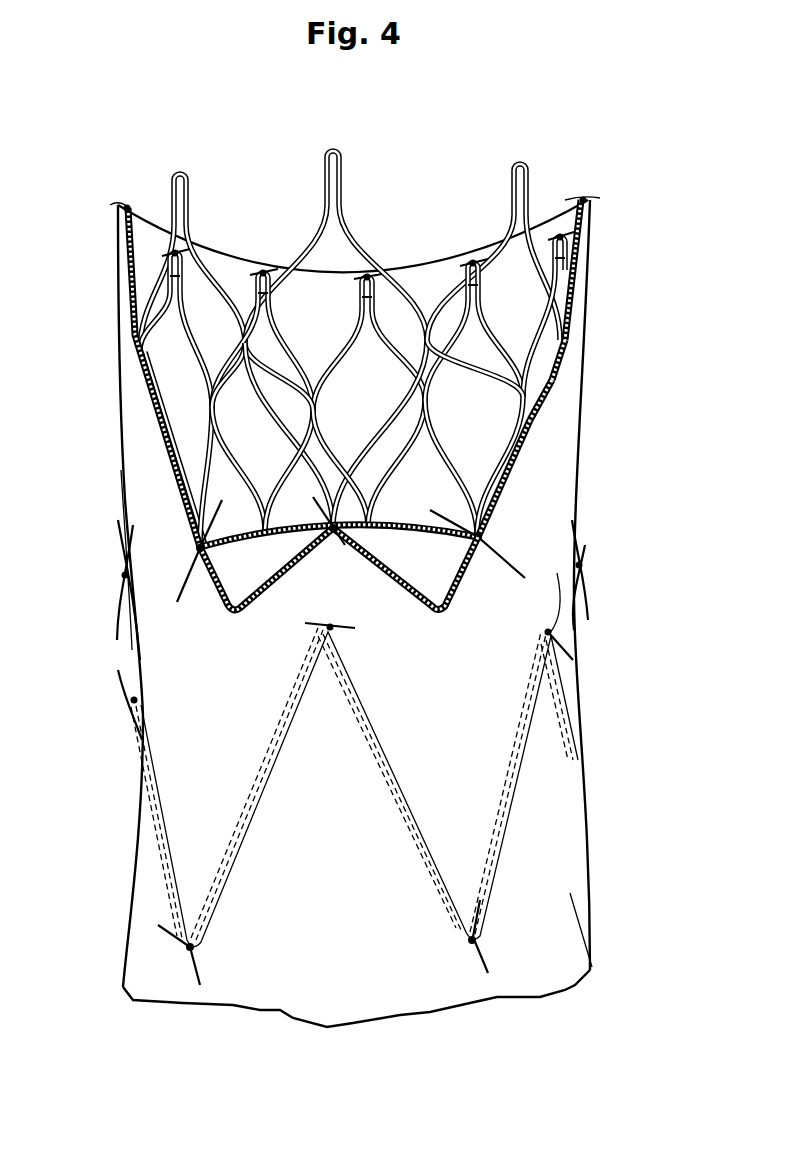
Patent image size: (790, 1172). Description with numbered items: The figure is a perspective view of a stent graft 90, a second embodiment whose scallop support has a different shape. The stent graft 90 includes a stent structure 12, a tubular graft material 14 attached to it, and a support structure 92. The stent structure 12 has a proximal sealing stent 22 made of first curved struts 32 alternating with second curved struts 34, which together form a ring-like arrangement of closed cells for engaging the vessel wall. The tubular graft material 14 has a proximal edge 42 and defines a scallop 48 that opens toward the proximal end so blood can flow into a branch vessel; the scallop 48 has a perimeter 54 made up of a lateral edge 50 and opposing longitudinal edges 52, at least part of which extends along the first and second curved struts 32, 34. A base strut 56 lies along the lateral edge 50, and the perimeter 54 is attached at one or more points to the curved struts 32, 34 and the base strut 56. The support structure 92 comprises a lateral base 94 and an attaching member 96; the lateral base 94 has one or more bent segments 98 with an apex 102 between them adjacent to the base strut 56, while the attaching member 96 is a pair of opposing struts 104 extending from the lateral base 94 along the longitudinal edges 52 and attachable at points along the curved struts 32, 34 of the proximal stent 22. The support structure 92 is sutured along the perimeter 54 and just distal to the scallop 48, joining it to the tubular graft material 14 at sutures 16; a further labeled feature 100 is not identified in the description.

The stent graft 90 is at (628, 165).
The stent structure 12 is at (314, 172).
The tubular graft material 14 is at (542, 467).
The sutures 16 is at (198, 550).
The proximal sealing stent 22 is at (357, 222).
The first curved struts 32 is at (193, 228).
The second curved struts 34 is at (169, 250).
The proximal edge 42 is at (253, 262).
The scallop 48 is at (296, 500).
The lateral edge 50 is at (455, 512).
The longitudinal edges 52 is at (565, 354).
The perimeter 54 is at (548, 400).
The base strut 56 is at (223, 545).
The support structure 92 is at (486, 584).
The lateral base 94 is at (408, 630).
The attaching member 96 is at (148, 483).
The bent segments 98 is at (238, 613).
The suture 100 is at (333, 532).
The apex 102 is at (338, 548).
The opposing struts 104 is at (578, 308).